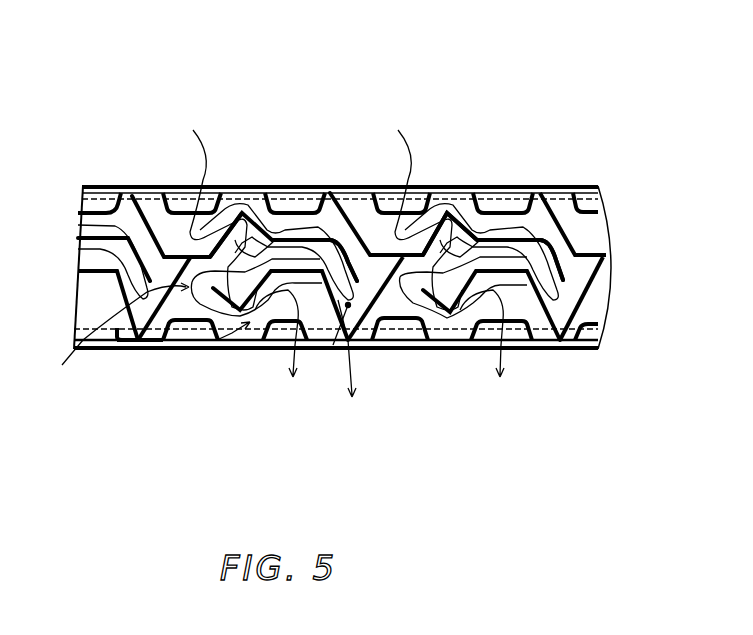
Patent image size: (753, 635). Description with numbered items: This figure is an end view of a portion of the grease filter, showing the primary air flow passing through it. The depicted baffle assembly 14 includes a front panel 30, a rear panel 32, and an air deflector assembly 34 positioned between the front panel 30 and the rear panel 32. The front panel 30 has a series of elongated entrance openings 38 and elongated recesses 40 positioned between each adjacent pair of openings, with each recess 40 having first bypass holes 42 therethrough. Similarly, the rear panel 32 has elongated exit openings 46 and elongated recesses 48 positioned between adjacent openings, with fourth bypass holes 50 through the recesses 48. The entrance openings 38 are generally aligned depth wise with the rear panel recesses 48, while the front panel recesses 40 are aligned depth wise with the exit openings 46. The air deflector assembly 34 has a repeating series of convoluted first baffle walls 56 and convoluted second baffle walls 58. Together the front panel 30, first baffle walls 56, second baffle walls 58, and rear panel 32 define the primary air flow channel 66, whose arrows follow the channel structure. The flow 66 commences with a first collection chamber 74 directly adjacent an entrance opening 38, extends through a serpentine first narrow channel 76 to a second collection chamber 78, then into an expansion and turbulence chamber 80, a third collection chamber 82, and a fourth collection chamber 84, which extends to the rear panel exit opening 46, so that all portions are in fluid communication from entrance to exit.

The baffle assembly 14 is at (217, 340).
The front panel 30 is at (488, 198).
The rear panel 32 is at (590, 327).
The air deflector assembly 34 is at (586, 231).
The entrance openings 38 is at (338, 221).
The front panel recesses 40 is at (309, 212).
The first bypass holes 42 is at (285, 195).
The exit openings 46 is at (286, 305).
The rear panel recesses 48 is at (166, 343).
The fourth bypass holes 50 is at (184, 335).
The first baffle walls 56 is at (550, 250).
The second baffle walls 58 is at (594, 272).
The primary air flow channel 66 is at (174, 225).
The first collection chamber 74 is at (198, 228).
The first narrow channel 76 is at (532, 214).
The second collection chamber 78 is at (367, 352).
The expansion and turbulence chamber 80 is at (243, 266).
The third collection chamber 82 is at (143, 353).
The fourth collection chamber 84 is at (302, 296).